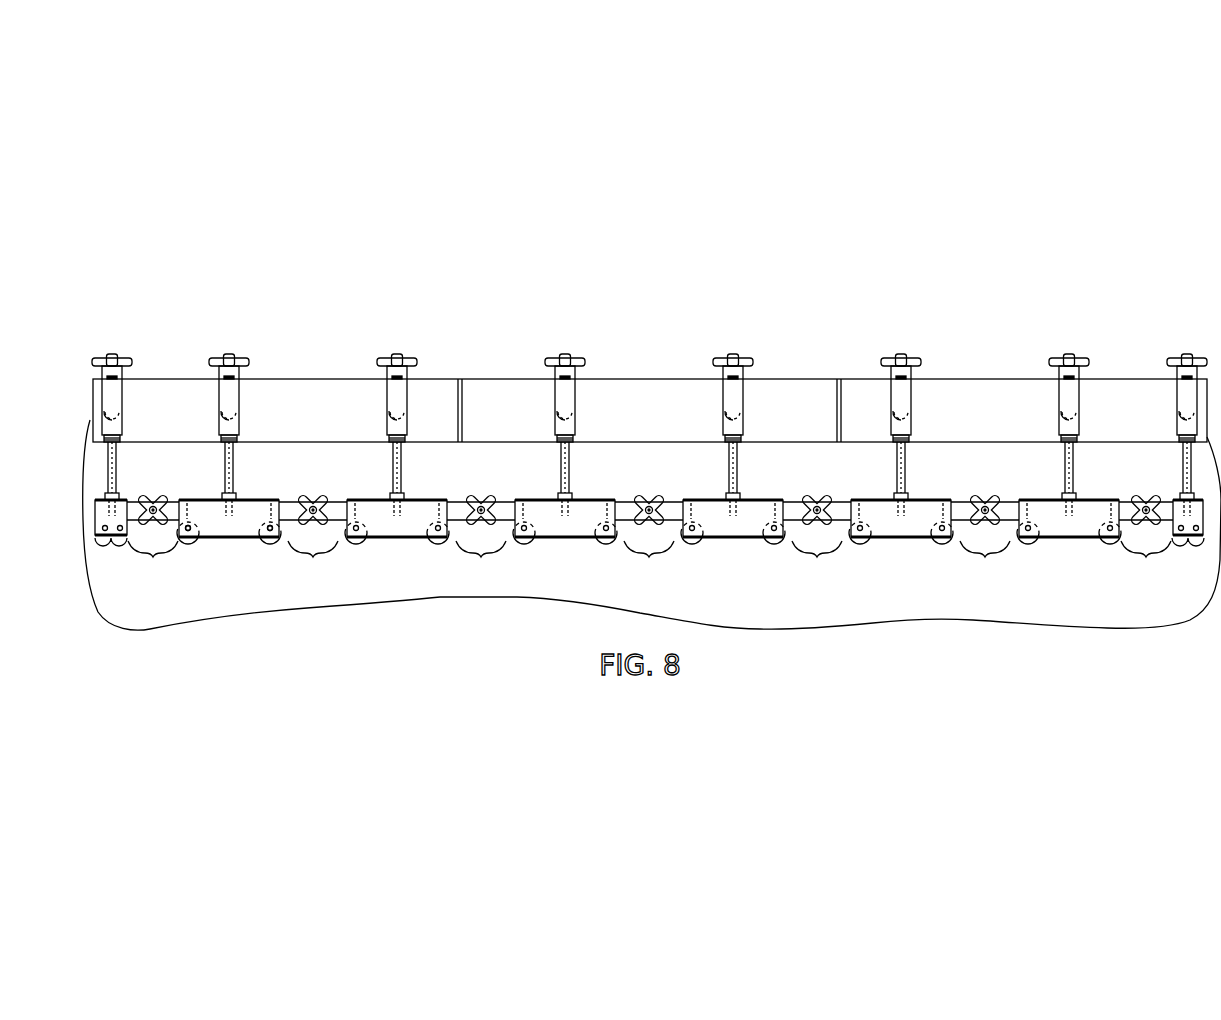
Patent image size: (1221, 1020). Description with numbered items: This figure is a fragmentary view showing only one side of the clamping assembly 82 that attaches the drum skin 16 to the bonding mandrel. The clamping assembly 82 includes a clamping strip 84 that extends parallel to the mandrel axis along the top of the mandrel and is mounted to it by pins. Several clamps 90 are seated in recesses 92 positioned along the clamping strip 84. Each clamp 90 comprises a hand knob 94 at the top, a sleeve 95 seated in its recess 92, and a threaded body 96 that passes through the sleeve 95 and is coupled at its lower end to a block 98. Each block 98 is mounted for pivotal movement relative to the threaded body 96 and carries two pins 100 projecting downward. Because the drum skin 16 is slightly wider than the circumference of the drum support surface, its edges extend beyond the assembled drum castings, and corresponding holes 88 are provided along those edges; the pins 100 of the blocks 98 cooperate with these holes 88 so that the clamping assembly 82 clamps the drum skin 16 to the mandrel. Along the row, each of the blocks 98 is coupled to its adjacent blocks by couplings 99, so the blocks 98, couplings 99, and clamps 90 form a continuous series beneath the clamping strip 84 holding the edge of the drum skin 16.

The drum skin 16 is at (779, 603).
The clamping assembly 82 is at (1138, 290).
The clamping strip 84 is at (780, 378).
The holes 88 is at (649, 558).
The clamps 90 is at (583, 344).
The recesses 92 is at (105, 418).
The hand knob 94 is at (102, 357).
The sleeve 95 is at (107, 393).
The threaded body 96 is at (103, 453).
The block 98 is at (108, 510).
The couplings 99 is at (173, 503).
The pins 100 is at (190, 528).